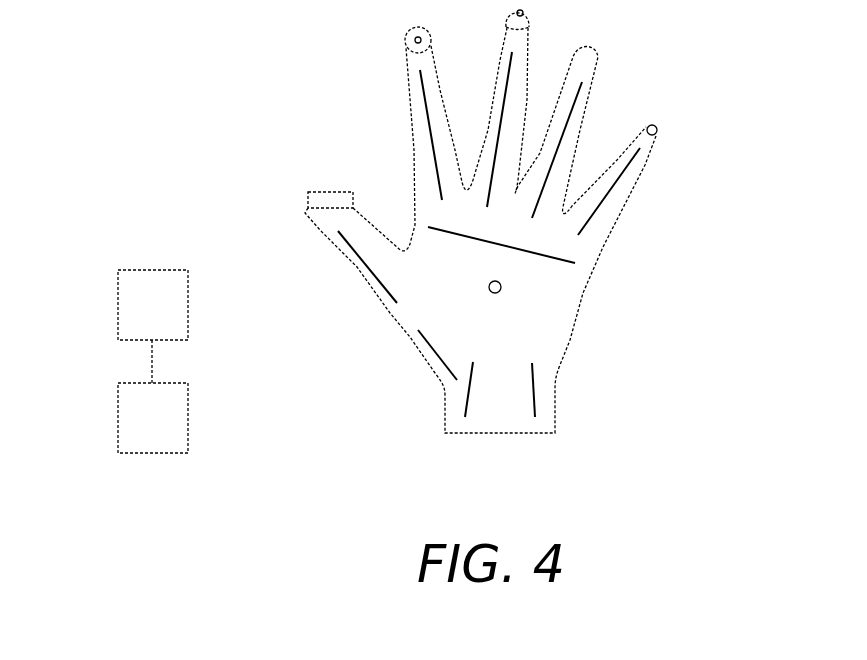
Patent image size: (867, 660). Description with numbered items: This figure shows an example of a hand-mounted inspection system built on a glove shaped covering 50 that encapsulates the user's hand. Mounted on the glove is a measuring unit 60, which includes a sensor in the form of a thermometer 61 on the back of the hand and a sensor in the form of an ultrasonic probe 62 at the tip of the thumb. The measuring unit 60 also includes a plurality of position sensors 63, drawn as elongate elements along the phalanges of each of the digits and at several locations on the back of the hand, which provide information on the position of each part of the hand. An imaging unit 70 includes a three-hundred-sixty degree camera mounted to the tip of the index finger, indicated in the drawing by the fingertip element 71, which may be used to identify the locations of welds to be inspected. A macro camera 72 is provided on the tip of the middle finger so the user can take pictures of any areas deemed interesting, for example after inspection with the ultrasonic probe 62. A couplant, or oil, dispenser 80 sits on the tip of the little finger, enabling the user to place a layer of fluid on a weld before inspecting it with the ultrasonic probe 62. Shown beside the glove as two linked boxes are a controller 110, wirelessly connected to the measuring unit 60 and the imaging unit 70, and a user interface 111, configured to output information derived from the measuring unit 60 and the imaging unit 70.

The glove shaped covering 50 is at (557, 335).
The measuring unit 60 is at (238, 214).
The thermometer 61 is at (501, 283).
The ultrasonic probe 62 is at (330, 192).
The position sensors 63 is at (497, 138).
The imaging unit 70 is at (258, 63).
The index fingertip sensor 71 is at (416, 38).
The macro camera 72 is at (524, 12).
The couplant dispenser 80 is at (657, 125).
The controller 110 is at (188, 300).
The user interface 111 is at (188, 415).